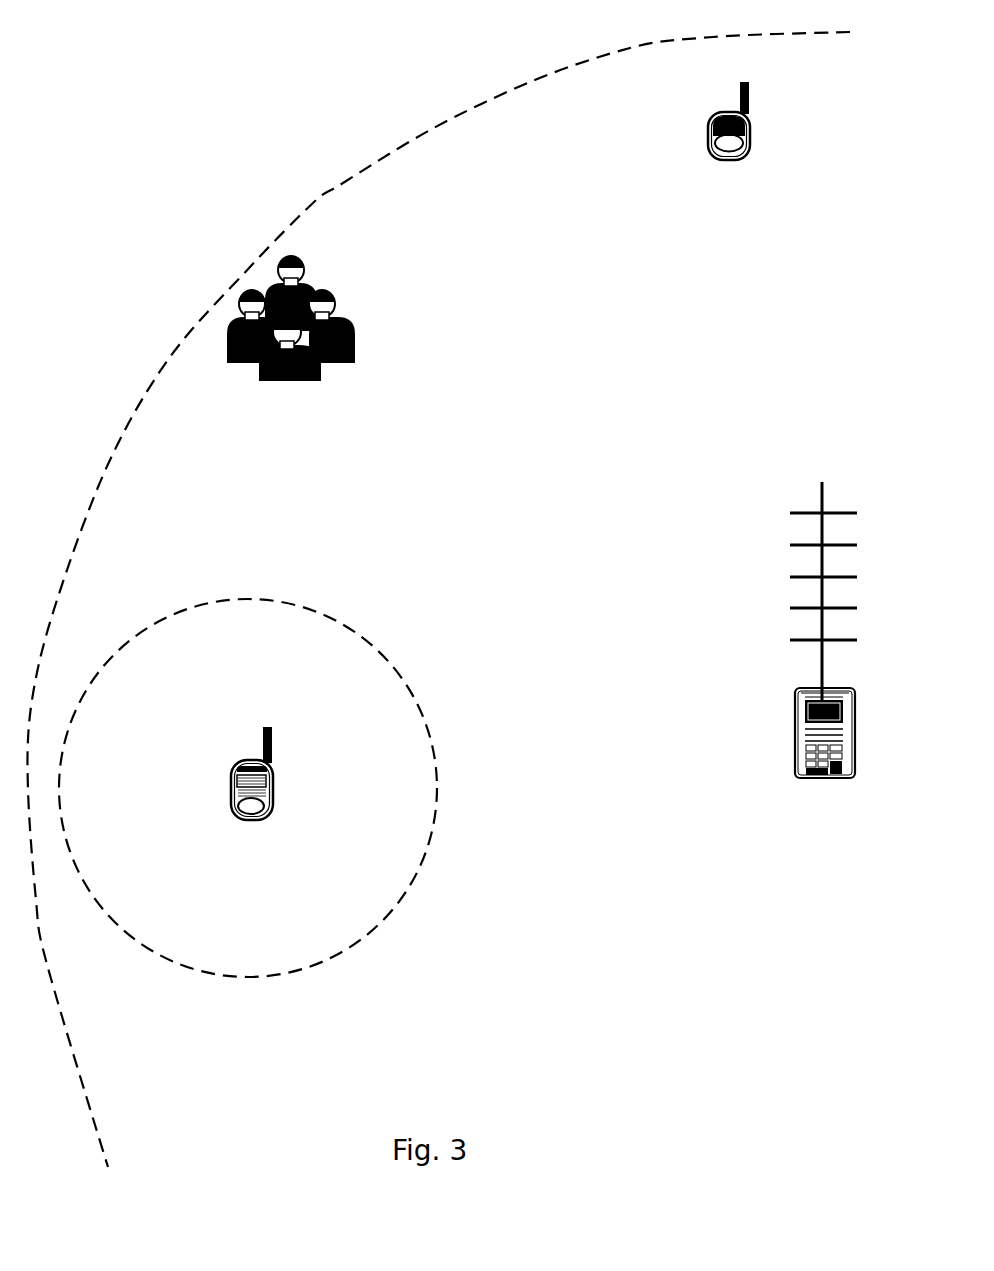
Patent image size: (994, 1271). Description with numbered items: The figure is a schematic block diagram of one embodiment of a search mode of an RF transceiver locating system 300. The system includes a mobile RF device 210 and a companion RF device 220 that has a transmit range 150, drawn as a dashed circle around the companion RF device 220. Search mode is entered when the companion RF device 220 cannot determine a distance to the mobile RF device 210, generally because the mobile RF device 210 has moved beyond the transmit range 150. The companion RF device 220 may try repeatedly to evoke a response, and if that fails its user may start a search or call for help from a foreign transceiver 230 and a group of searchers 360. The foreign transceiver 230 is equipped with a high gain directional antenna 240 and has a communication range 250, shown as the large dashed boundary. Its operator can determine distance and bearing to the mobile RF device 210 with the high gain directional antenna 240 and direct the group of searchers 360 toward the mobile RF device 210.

The RF transceiver locating system 300 is at (138, 116).
The communication range 250 is at (331, 177).
The transmit range 150 is at (415, 697).
The mobile RF device 210 is at (750, 131).
The companion RF device 220 is at (273, 770).
The foreign transceiver 230 is at (796, 690).
The high gain directional antenna 240 is at (791, 513).
The group of searchers 360 is at (333, 300).